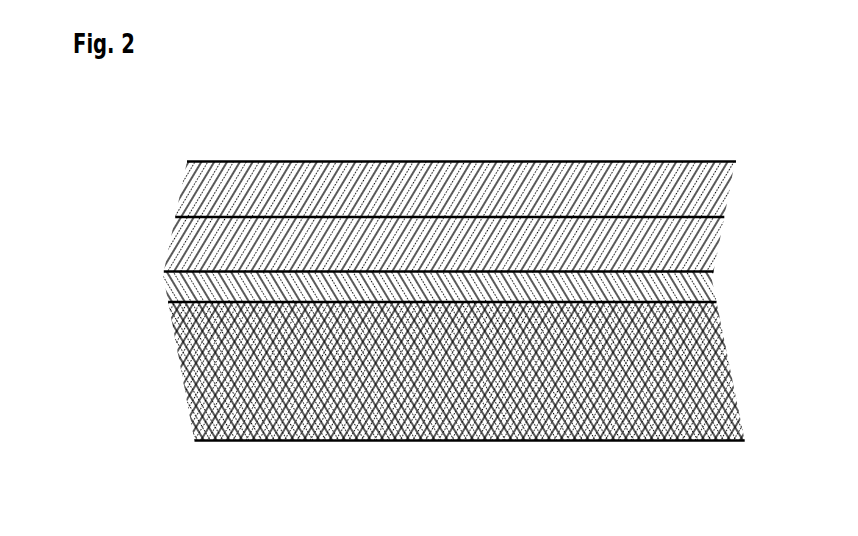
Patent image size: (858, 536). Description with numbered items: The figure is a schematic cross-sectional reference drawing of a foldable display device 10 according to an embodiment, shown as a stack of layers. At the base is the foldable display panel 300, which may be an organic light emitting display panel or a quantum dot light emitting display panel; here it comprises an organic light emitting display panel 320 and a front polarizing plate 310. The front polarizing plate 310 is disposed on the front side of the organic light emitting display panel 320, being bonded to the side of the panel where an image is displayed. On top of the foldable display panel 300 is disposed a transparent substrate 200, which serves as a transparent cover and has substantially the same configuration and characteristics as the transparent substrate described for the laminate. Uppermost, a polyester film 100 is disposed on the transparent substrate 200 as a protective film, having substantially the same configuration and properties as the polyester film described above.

The foldable display device 10 is at (233, 115).
The polyester film 100 is at (716, 197).
The transparent substrate 200 is at (708, 239).
The foldable display panel 300 is at (499, 355).
The front polarizing plate 310 is at (710, 286).
The organic light emitting display panel 320 is at (713, 360).